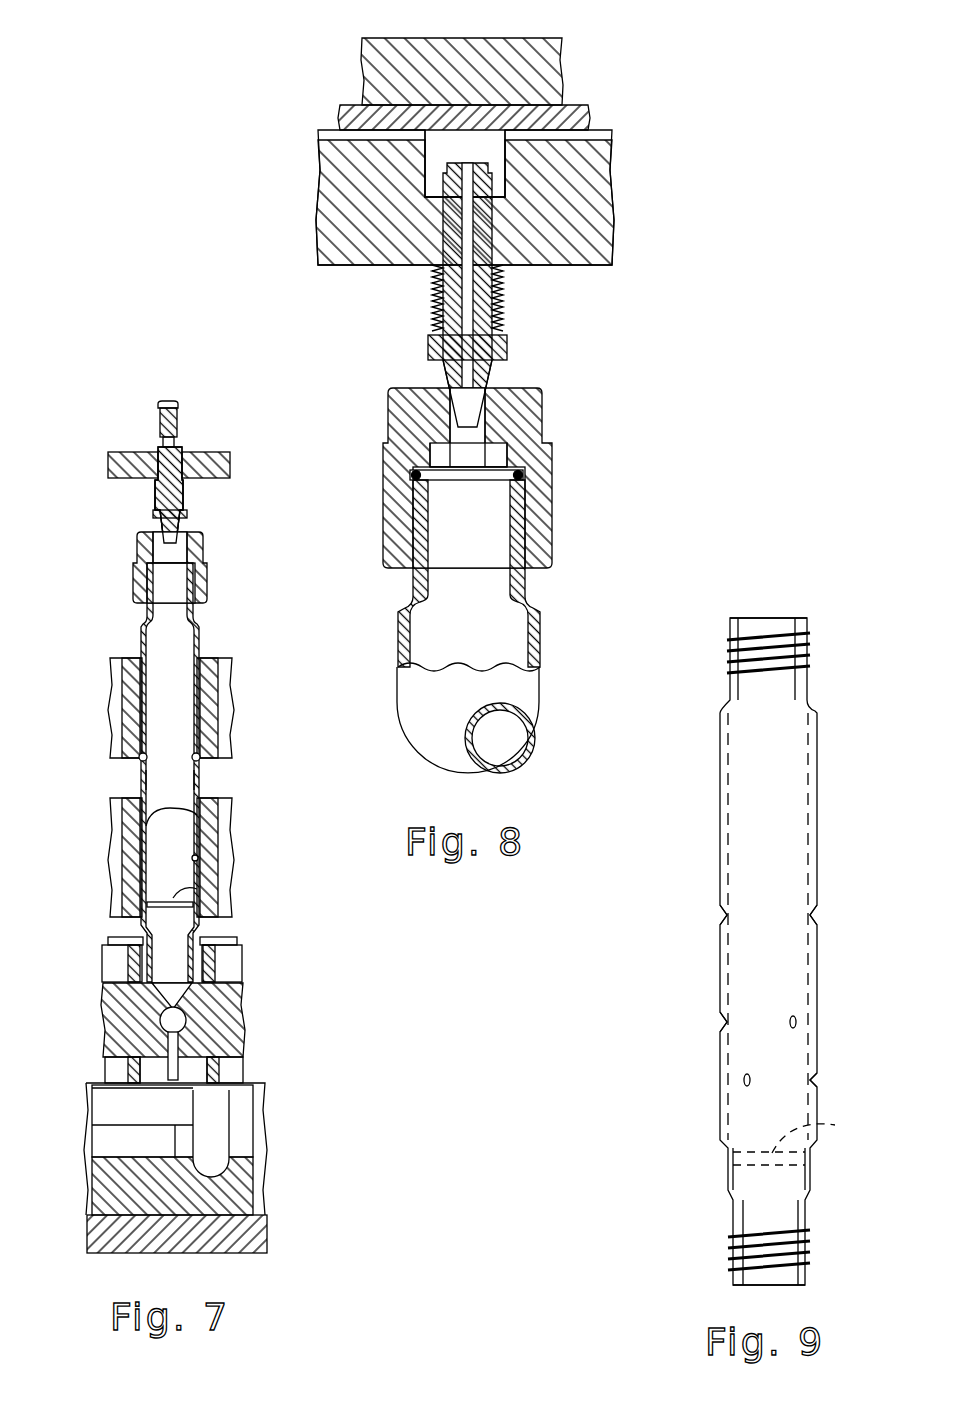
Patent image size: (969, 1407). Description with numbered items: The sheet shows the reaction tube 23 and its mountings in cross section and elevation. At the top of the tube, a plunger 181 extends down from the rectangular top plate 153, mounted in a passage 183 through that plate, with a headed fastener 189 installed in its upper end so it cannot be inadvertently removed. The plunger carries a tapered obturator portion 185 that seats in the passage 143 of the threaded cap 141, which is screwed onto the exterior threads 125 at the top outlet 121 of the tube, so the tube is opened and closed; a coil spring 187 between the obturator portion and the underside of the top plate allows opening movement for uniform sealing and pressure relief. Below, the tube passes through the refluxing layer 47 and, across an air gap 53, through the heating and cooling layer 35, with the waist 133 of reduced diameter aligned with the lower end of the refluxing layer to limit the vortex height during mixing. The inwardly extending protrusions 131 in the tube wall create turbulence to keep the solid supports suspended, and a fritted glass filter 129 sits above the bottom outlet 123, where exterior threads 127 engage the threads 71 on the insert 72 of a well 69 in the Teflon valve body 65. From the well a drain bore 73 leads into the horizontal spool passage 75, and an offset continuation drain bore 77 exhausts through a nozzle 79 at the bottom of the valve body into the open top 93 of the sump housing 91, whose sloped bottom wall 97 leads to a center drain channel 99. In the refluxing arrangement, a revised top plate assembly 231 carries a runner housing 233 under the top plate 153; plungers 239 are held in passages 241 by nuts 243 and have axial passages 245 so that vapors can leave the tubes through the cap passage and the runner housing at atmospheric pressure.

In FIG. 8, the top plate 153 is at (543, 73).
In FIG. 7, the top plate 153 is at (212, 455).
In FIG. 8, the revised top plate assembly 231 is at (642, 125).
In FIG. 8, the passages 241 is at (443, 147).
In FIG. 8, the nuts 243 is at (440, 196).
In FIG. 8, the runner housing 233 is at (583, 180).
In FIG. 8, the axial passages 245 is at (468, 363).
In FIG. 8, the plungers 239 is at (542, 310).
In FIG. 8, the threaded cap 141 is at (523, 413).
In FIG. 7, the threaded cap 141 is at (205, 560).
In FIG. 8, the passage 143 is at (467, 453).
In FIG. 7, the passage 143 is at (170, 552).
In FIG. 8, the reaction tube 23 is at (527, 577).
In FIG. 7, the reaction tube 23 is at (203, 630).
In FIG. 9, the reaction tube 23 is at (690, 863).
In FIG. 7, the headed fastener 189 is at (166, 401).
In FIG. 7, the passage 183 is at (172, 457).
In FIG. 7, the coil spring 187 is at (155, 486).
In FIG. 7, the plunger 181 is at (138, 514).
In FIG. 7, the tapered obturator portion 185 is at (183, 530).
In FIG. 7, the refluxing layer 47 is at (226, 718).
In FIG. 7, the waist 133 is at (142, 760).
In FIG. 9, the waist 133 is at (818, 917).
In FIG. 7, the air gap 53 is at (197, 788).
In FIG. 7, the protrusions 131 is at (200, 825).
In FIG. 9, the protrusions 131 is at (722, 1022).
In FIG. 7, the heating and cooling layer 35 is at (226, 862).
In FIG. 7, the filter 129 is at (197, 893).
In FIG. 9, the filter 129 is at (807, 1144).
In FIG. 7, the threads 71 is at (197, 935).
In FIG. 7, the wells 69 is at (194, 968).
In FIG. 7, the insert 72 is at (140, 968).
In FIG. 7, the valve body 65 is at (124, 1008).
In FIG. 7, the drain bores 73 is at (178, 1002).
In FIG. 7, the spool passage 75 is at (176, 1020).
In FIG. 7, the continuation drain bore 77 is at (180, 1048).
In FIG. 7, the open top 93 is at (153, 1070).
In FIG. 7, the nozzle 79 is at (208, 1073).
In FIG. 7, the sloped bottom wall 97 is at (140, 1150).
In FIG. 7, the center drain channel 99 is at (218, 1150).
In FIG. 7, the sump housing 91 is at (257, 1195).
In FIG. 9, the top outlet 121 is at (762, 617).
In FIG. 9, the exterior threads 125 is at (810, 648).
In FIG. 9, the exterior threads 127 is at (810, 1240).
In FIG. 9, the bottom outlet 123 is at (772, 1287).